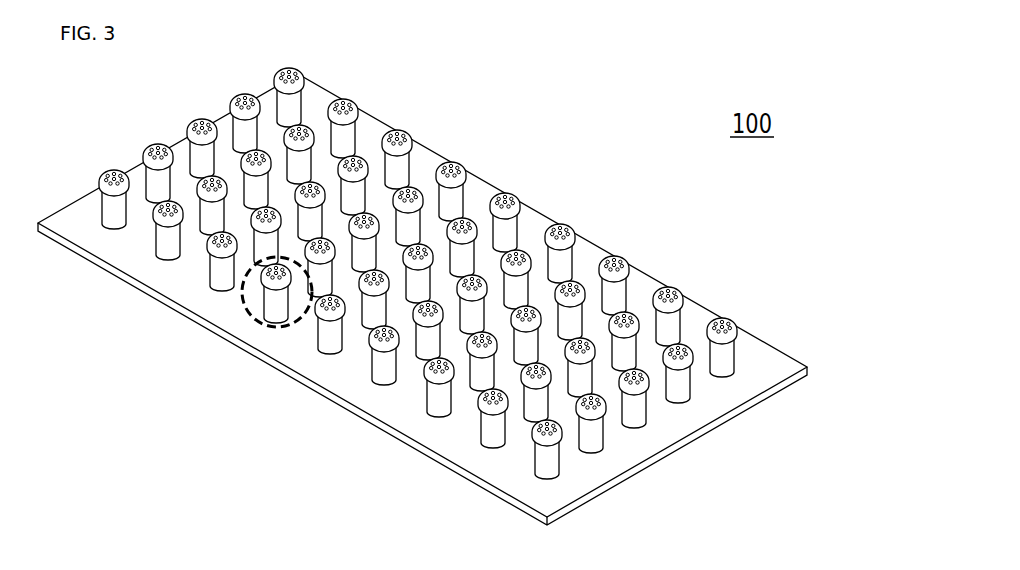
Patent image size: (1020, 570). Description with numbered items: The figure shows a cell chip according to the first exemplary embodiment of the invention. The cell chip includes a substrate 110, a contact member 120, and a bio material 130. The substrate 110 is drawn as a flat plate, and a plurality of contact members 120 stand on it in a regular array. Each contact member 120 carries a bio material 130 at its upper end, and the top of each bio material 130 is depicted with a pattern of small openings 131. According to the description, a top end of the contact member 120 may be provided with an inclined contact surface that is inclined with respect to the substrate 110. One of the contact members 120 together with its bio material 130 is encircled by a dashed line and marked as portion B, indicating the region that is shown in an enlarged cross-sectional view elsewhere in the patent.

The substrate 110 is at (458, 453).
The contact member 120 is at (606, 246).
The bio material 130 is at (492, 170).
The holes 131 is at (544, 183).
The portion B is at (247, 312).